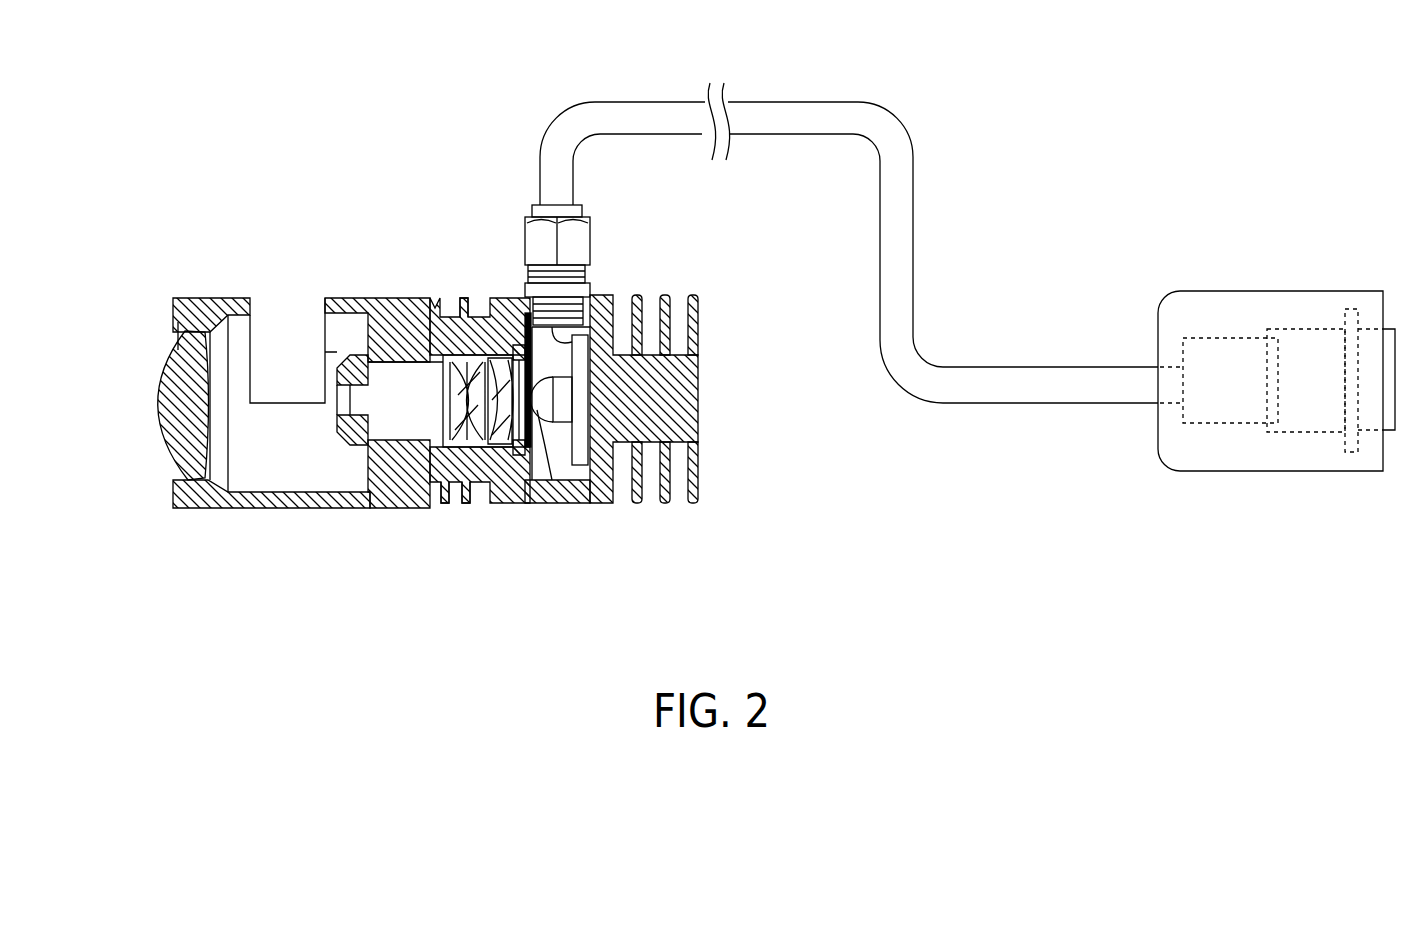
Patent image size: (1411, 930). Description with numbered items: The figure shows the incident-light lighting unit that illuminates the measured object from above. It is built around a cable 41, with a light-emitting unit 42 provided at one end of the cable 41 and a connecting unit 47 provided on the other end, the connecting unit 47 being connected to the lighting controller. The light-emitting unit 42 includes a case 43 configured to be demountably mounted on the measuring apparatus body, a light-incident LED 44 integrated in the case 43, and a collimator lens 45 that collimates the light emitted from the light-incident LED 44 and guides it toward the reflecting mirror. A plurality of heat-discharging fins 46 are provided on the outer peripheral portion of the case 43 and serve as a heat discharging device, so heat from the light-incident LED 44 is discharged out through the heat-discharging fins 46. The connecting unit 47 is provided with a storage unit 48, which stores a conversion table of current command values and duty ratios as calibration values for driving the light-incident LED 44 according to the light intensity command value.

The cable 41 is at (818, 100).
The light-emitting unit 42 is at (260, 192).
The case 43 is at (582, 506).
The light-incident LED 44 is at (549, 504).
The collimator lens 45 is at (160, 440).
The heat-discharging fins 46 is at (468, 506).
The connecting unit 47 is at (1227, 472).
The storage unit 48 is at (1310, 330).